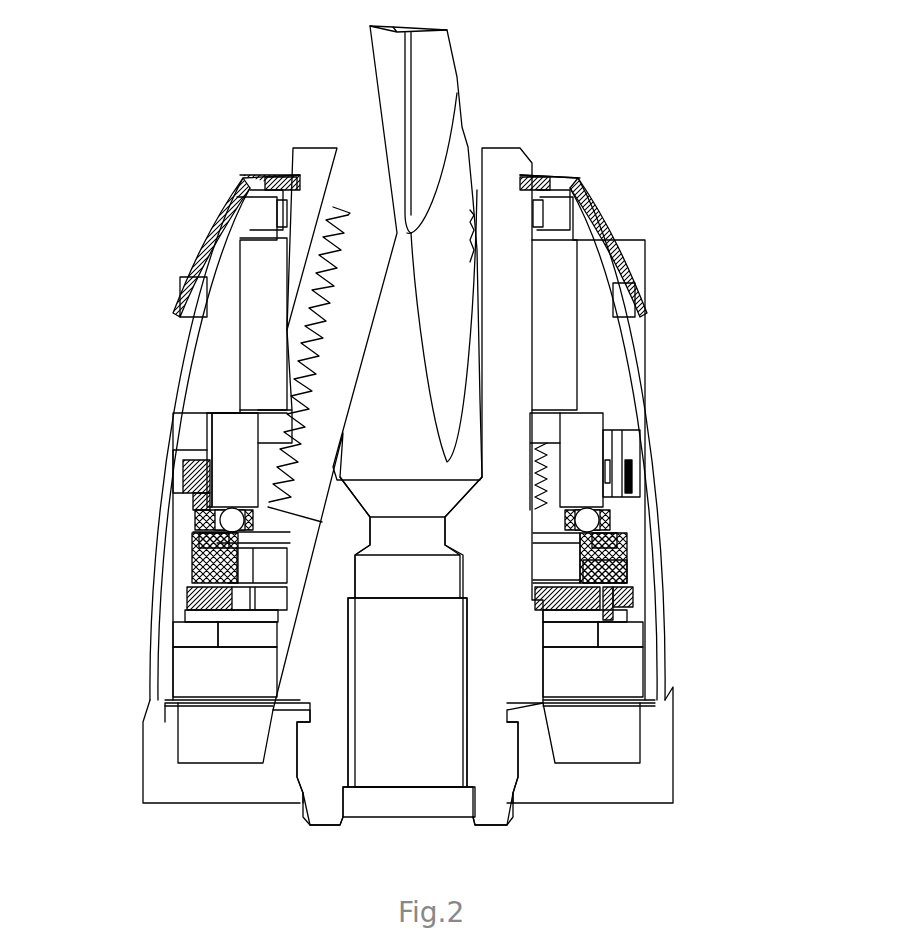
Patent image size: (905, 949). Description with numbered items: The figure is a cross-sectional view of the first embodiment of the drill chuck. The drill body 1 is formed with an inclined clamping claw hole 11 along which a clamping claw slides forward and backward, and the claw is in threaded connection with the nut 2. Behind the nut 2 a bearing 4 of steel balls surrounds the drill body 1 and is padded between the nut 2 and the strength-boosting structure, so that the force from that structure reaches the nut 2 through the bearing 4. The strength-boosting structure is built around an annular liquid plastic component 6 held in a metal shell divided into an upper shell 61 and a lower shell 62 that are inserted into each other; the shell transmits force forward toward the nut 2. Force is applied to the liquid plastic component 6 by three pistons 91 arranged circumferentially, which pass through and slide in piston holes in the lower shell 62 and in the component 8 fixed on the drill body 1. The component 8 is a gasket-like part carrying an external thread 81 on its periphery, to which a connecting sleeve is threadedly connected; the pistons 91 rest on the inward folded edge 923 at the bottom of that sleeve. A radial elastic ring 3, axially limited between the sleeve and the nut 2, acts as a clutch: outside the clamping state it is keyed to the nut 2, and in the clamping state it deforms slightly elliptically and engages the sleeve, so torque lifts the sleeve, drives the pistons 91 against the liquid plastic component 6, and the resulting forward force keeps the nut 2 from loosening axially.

The drill body 1 is at (508, 295).
The clamping claw hole 11 is at (305, 293).
The nut 2 is at (585, 435).
The radial elastic ring 3 is at (600, 505).
The bearing 4 is at (584, 518).
The upper shell 61 is at (606, 540).
The liquid plastic component 6 is at (605, 572).
The lower shell 62 is at (610, 583).
The component fixed on the drill body 8 is at (195, 598).
The external thread 81 is at (608, 600).
The piston 91 is at (610, 622).
The inward folded edge 923 is at (610, 633).